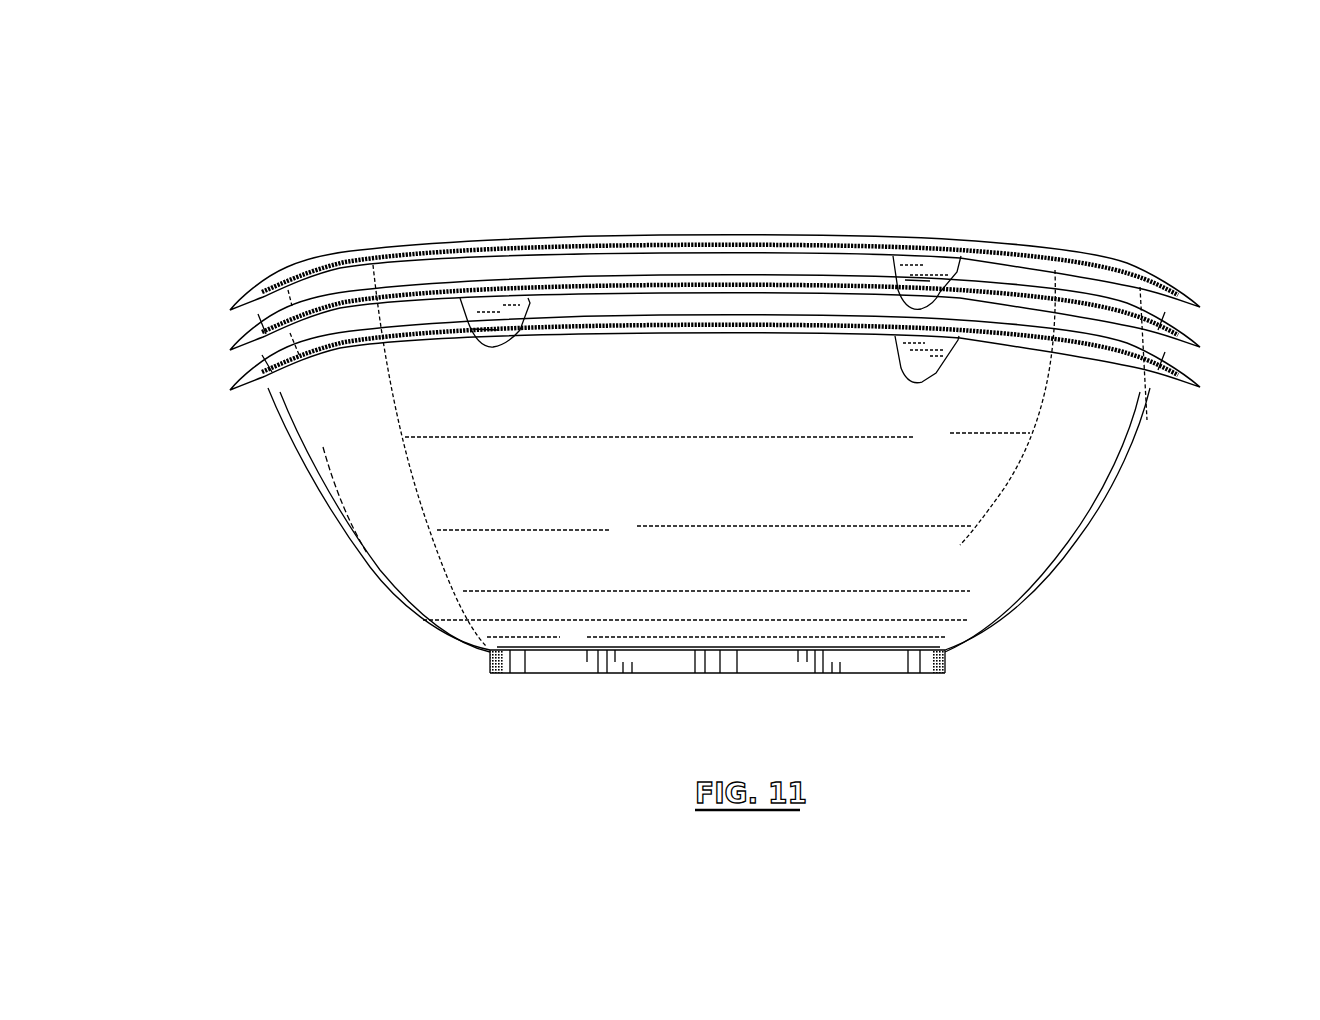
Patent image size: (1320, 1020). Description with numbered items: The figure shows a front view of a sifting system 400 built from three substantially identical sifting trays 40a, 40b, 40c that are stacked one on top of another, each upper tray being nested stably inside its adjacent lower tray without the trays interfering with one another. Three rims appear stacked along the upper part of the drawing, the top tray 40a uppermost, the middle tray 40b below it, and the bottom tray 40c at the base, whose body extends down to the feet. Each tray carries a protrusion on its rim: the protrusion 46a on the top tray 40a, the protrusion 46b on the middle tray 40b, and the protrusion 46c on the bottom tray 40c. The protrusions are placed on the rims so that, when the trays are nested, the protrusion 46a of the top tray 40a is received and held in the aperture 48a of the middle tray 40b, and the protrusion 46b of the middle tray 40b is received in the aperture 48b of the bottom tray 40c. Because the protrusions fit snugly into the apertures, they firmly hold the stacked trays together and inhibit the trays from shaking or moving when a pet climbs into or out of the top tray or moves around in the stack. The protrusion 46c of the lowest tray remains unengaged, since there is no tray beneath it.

The sifting system 400 is at (278, 116).
The sifting tray 40a is at (1043, 268).
The sifting tray 40b is at (995, 310).
The sifting tray 40c is at (972, 385).
The protrusion 46a is at (958, 268).
The protrusion 46b is at (470, 307).
The protrusion 46c is at (937, 373).
The aperture 48a is at (917, 280).
The aperture 48b is at (485, 328).